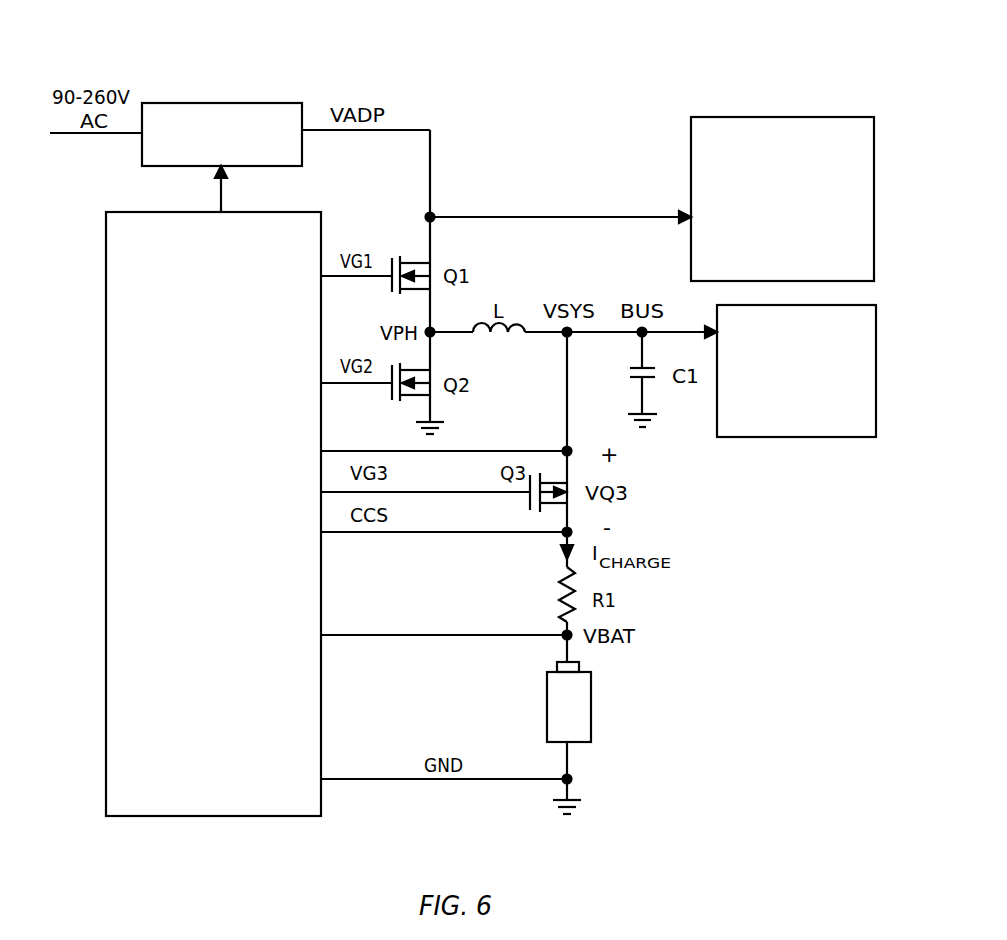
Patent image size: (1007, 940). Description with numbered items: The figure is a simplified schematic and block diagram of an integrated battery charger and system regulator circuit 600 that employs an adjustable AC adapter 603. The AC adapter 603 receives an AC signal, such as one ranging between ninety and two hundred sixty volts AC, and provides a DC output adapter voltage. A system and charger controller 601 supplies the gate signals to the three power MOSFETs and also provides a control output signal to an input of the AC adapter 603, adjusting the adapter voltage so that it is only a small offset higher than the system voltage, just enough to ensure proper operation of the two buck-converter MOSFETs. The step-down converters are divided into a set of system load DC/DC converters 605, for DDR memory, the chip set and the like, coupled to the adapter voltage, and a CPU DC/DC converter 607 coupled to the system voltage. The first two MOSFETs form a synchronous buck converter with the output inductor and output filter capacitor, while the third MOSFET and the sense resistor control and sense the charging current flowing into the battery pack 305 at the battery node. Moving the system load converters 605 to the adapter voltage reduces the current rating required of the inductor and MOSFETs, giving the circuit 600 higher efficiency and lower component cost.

The integrated battery charger and system regulator circuit 600 is at (578, 74).
The system and charger controller 601 is at (195, 556).
The adjustable AC adapter 603 is at (232, 103).
The system load DC/DC converters 605 is at (768, 263).
The CPU DC/DC converter 607 is at (782, 407).
The battery pack 305 is at (583, 710).